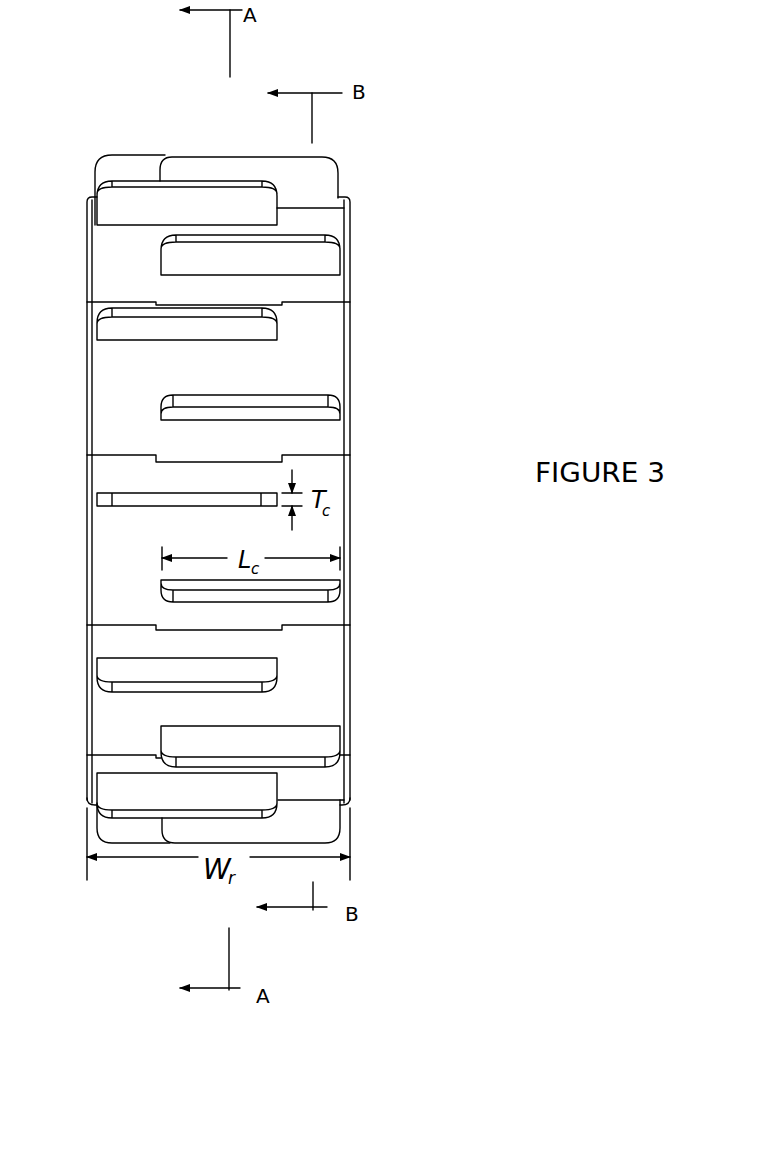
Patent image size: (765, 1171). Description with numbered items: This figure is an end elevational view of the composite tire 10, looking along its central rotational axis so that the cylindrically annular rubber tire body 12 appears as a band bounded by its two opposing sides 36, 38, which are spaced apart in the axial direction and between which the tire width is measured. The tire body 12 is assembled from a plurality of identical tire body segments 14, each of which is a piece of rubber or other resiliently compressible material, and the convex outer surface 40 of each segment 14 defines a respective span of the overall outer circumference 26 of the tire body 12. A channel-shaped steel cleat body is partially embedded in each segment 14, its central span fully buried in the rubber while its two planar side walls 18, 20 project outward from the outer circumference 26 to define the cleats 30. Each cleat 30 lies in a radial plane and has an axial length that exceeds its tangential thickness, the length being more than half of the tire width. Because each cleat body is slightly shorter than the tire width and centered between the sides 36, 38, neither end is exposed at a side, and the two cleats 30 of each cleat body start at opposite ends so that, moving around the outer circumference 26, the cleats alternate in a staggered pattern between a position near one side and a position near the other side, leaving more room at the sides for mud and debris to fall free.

The composite tire 10 is at (427, 163).
The tire body 12 is at (368, 582).
The tire body segment 14 is at (352, 533).
The side wall 18 is at (327, 415).
The side wall 20 is at (107, 328).
The outer circumference 26 is at (328, 358).
The cleat 30 is at (118, 305).
The side of tire body 36 is at (357, 713).
The side of tire body 38 is at (83, 738).
The convex outer surface 40 is at (103, 422).